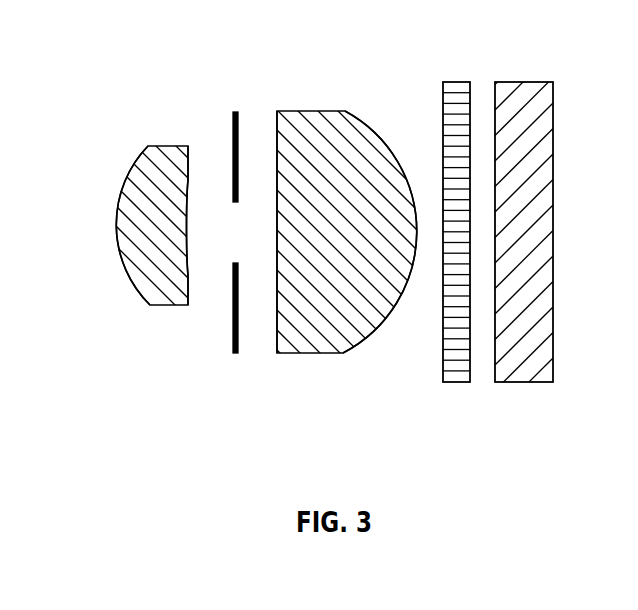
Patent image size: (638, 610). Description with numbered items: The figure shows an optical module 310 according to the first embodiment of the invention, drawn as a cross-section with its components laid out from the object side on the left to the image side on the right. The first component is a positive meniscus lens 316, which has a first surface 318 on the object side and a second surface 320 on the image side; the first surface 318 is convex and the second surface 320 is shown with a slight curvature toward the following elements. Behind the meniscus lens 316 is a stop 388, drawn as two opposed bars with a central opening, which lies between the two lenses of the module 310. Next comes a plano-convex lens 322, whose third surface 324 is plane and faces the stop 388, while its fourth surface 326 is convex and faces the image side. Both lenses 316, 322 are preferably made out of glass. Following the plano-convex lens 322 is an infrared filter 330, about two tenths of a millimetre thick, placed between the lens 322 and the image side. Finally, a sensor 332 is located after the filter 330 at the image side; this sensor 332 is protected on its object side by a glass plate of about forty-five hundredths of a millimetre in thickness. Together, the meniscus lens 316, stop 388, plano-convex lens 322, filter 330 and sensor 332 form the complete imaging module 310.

The module 310 is at (115, 75).
The positive meniscus lens 316 is at (165, 152).
The first surface 318 is at (134, 161).
The second surface 320 is at (188, 227).
The plano-convex lens 322 is at (302, 340).
The third surface 324 is at (289, 200).
The fourth surface 326 is at (368, 318).
The infrared filter 330 is at (457, 87).
The sensor 332 is at (547, 87).
The aperture stop 388 is at (233, 340).